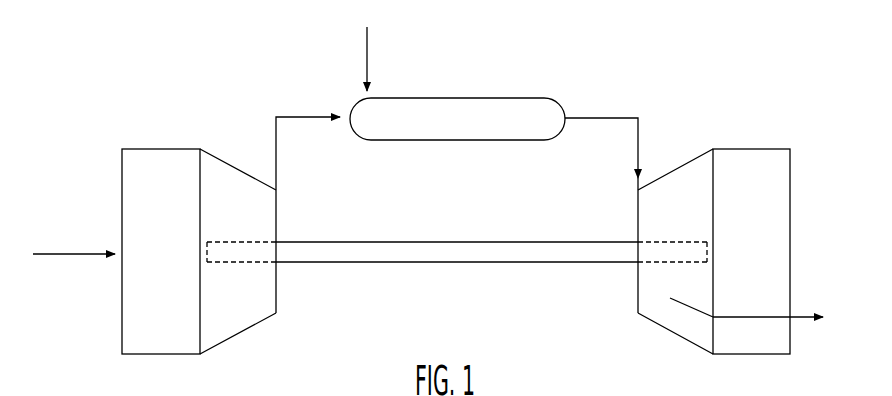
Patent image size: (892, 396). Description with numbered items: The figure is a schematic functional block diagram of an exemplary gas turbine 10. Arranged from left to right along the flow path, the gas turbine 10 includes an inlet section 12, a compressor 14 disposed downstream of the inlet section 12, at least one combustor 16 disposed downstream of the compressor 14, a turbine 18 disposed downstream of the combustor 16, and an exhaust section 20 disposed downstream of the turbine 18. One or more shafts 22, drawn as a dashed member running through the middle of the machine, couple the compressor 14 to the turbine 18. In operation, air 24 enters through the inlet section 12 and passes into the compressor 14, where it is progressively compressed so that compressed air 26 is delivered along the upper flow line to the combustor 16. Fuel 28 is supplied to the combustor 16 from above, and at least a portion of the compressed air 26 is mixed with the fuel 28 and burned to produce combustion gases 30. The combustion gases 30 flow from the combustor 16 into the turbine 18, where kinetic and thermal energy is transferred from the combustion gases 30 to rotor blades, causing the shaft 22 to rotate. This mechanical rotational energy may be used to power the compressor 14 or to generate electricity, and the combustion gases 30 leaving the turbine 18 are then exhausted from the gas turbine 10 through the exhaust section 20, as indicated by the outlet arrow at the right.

The gas turbine 10 is at (322, 48).
The inlet section 12 is at (140, 149).
The compressor 14 is at (227, 160).
The combustor 16 is at (507, 98).
The turbine 18 is at (697, 153).
The exhaust section 20 is at (765, 149).
The shaft 22 is at (418, 262).
The air 24 is at (50, 254).
The compressed air 26 is at (303, 118).
The fuel 28 is at (370, 62).
The combustion gases 30 is at (583, 118).